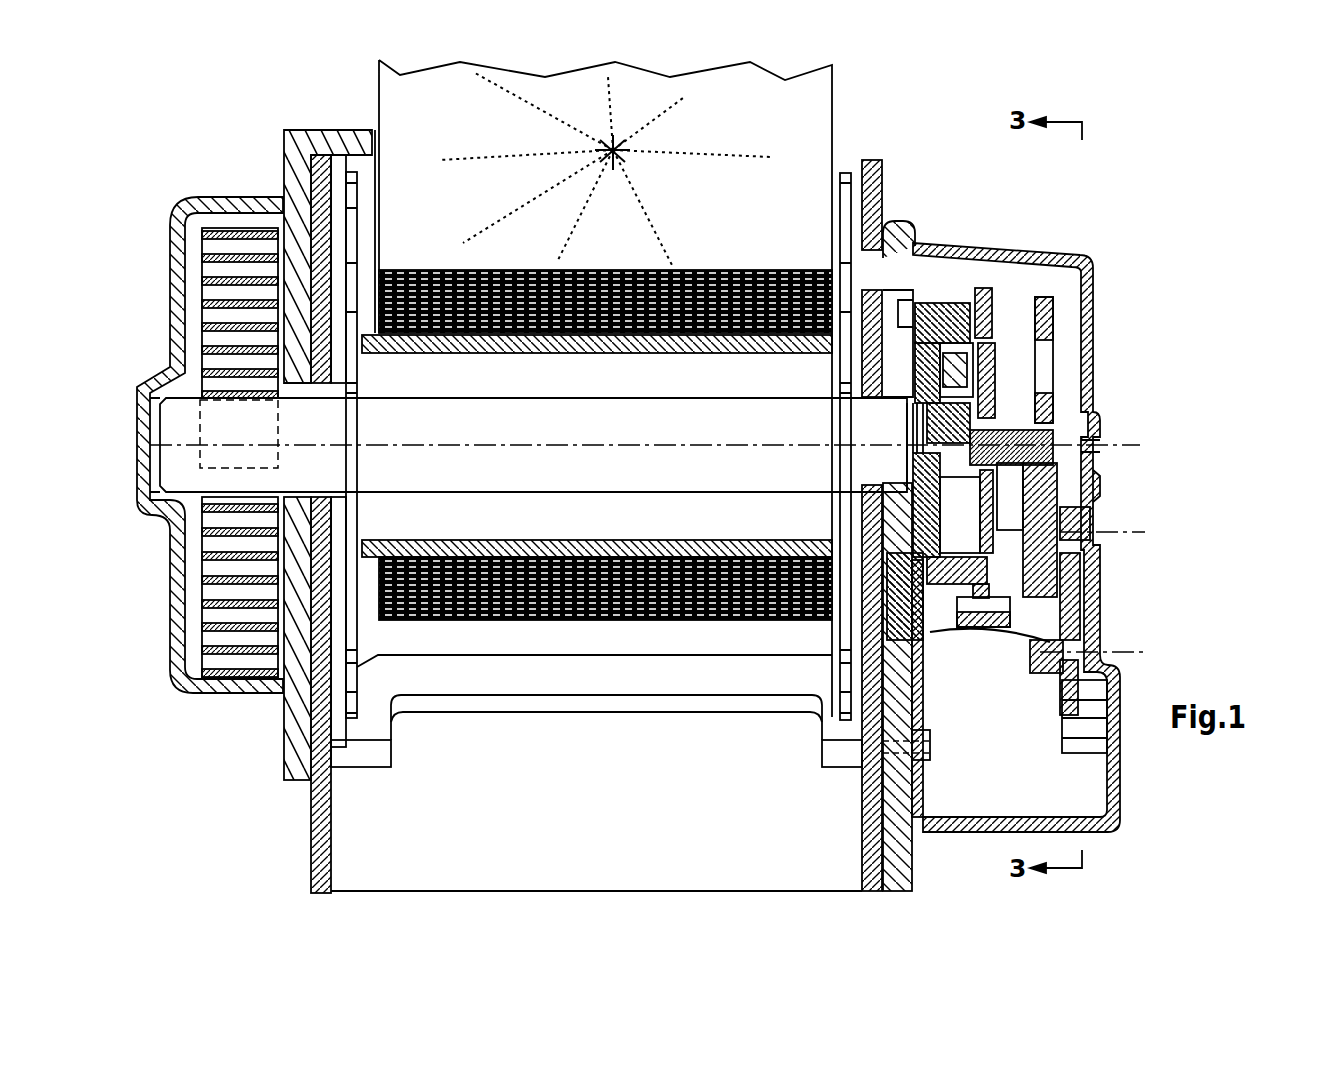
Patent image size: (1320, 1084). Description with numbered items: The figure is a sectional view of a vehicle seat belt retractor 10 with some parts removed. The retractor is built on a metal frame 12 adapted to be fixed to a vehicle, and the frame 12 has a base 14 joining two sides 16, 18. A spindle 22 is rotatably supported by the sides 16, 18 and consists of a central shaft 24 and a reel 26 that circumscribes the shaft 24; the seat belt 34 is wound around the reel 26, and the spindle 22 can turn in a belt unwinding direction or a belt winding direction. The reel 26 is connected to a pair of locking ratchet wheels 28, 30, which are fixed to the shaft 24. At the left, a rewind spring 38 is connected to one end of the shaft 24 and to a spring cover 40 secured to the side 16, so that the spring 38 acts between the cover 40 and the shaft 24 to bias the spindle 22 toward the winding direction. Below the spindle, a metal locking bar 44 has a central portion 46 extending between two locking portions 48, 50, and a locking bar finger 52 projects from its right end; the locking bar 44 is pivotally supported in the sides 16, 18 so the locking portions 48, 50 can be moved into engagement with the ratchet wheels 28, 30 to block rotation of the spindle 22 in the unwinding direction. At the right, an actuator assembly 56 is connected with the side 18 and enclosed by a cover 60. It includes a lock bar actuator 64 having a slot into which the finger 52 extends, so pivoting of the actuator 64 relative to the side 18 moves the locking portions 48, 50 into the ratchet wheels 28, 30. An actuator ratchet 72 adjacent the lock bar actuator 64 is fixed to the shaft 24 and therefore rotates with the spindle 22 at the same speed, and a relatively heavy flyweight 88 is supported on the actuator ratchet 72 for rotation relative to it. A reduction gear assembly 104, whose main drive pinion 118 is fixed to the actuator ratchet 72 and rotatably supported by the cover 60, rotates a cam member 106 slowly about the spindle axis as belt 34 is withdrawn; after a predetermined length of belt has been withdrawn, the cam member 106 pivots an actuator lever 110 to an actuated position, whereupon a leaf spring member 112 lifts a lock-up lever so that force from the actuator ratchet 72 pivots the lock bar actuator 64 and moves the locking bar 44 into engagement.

The vehicle seat belt retractor 10 is at (955, 122).
The frame 12 is at (544, 543).
The base 14 is at (505, 870).
The side 16 is at (322, 893).
The side 18 is at (878, 891).
The spindle 22 is at (540, 545).
The central shaft 24 is at (533, 470).
The reel 26 is at (700, 540).
The locking ratchet wheel 28 is at (365, 165).
The locking ratchet wheel 30 is at (845, 172).
The seat belt 34 is at (405, 97).
The rewind spring 38 is at (202, 628).
The spring cover 40 is at (152, 505).
The locking bar 44 is at (640, 722).
The central portion 46 is at (582, 668).
The locking portion 48 is at (353, 757).
The locking portion 50 is at (836, 762).
The locking bar finger 52 is at (930, 745).
The actuator assembly 56 is at (1082, 188).
The cover 60 is at (1090, 292).
The lock bar actuator 64 is at (948, 290).
The actuator ratchet 72 is at (998, 292).
The flyweight 88 is at (1020, 292).
The reduction gear assembly 104 is at (1097, 518).
The cam member 106 is at (1093, 493).
The actuator lever 110 is at (1087, 603).
The leaf spring member 112 is at (1017, 637).
The main drive pinion 118 is at (1018, 390).